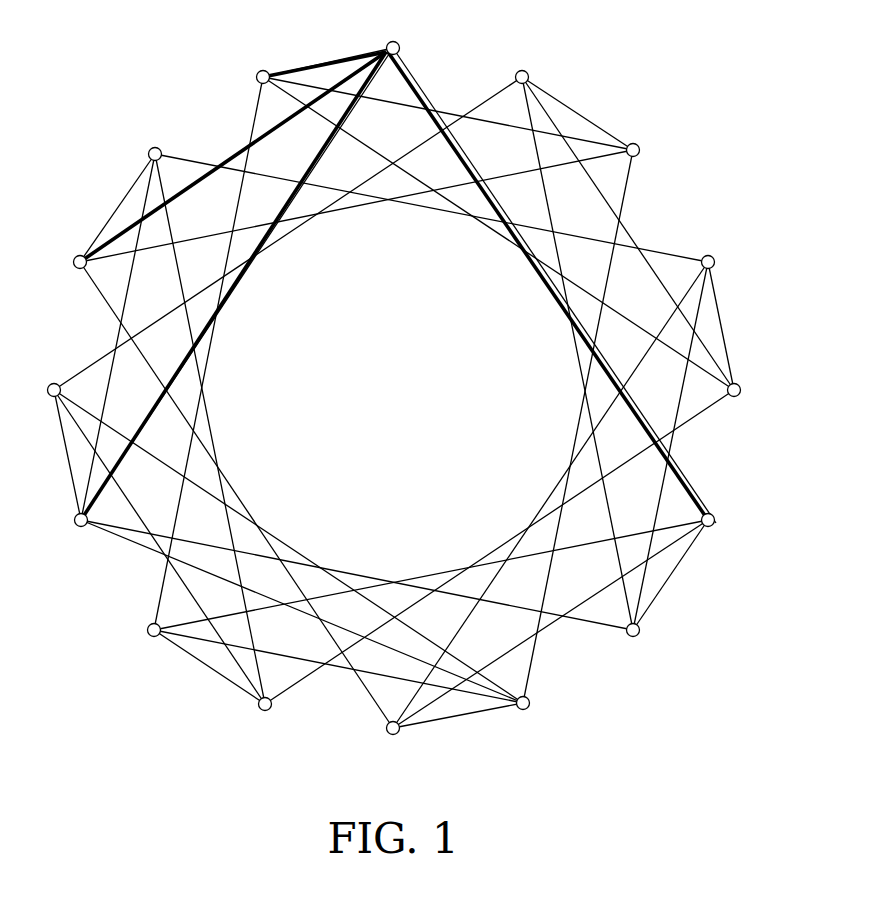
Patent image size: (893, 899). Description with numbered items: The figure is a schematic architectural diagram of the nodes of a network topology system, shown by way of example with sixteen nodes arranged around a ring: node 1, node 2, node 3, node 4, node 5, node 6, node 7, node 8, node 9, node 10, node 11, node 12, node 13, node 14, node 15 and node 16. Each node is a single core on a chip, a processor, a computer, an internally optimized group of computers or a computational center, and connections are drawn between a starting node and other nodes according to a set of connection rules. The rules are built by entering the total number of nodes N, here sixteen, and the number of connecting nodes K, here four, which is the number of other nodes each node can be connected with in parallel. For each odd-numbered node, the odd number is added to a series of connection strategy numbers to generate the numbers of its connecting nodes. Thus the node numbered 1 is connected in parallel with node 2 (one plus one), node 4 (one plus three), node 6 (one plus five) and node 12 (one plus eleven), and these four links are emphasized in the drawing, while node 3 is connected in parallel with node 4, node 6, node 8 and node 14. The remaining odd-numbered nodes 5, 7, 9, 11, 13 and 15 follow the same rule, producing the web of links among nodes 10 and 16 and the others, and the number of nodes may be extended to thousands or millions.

The node 1 is at (391, 32).
The node 2 is at (262, 59).
The node 3 is at (151, 141).
The node 4 is at (67, 270).
The node 5 is at (35, 401).
The node 6 is at (61, 533).
The node 7 is at (134, 641).
The node 8 is at (257, 729).
The node 9 is at (391, 756).
The node 10 is at (537, 732).
The node 11 is at (648, 657).
The node 12 is at (731, 533).
The node 13 is at (756, 403).
The node 14 is at (731, 264).
The node 15 is at (657, 157).
The node 16 is at (543, 73).